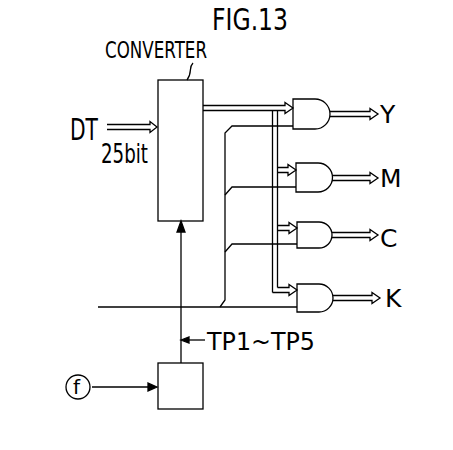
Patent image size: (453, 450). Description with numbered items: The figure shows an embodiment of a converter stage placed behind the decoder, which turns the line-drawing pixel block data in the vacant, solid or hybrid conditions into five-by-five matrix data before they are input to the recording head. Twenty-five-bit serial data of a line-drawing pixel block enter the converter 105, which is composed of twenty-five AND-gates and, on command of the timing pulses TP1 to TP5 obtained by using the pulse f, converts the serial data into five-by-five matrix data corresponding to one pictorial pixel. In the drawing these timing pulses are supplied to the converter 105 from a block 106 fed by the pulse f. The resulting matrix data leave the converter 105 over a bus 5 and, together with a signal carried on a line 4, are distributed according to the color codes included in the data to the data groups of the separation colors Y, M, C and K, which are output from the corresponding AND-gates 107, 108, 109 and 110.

The converter 105 is at (180, 150).
The timing pulse generator 106 is at (180, 315).
The AND-gate 107 is at (334, 101).
The AND-gate 108 is at (336, 164).
The AND-gate 109 is at (337, 221).
The AND-gate 110 is at (338, 284).
The data bus 5 is at (240, 104).
The signal line 4 is at (126, 307).